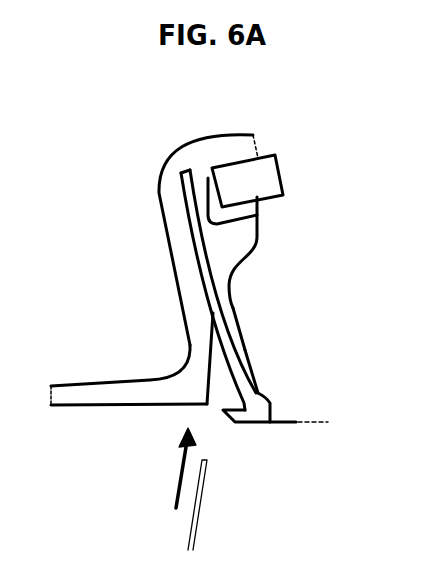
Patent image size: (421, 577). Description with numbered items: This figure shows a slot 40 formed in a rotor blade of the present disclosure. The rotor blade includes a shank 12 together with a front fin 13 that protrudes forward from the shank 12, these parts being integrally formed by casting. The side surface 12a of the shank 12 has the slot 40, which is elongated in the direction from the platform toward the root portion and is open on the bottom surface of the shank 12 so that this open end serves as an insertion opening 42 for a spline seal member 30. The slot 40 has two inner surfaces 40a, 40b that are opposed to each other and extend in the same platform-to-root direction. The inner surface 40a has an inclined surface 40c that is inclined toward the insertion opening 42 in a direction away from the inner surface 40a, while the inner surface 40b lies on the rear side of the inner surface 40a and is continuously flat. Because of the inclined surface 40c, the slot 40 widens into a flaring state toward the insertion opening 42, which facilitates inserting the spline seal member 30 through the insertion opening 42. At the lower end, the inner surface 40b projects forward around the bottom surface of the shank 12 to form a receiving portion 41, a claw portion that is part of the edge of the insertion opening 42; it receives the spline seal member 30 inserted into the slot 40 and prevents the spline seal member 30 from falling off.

The shank 12 is at (175, 158).
The side surface 12a is at (234, 150).
The front fin 13 is at (107, 392).
The slot 40 is at (195, 220).
The inner surface 40a is at (203, 232).
The inner surface 40b is at (212, 277).
The inclined surface 40c is at (210, 352).
The receiving portion 41 is at (238, 400).
The insertion opening 42 is at (213, 412).
The spline seal member 30 is at (203, 508).